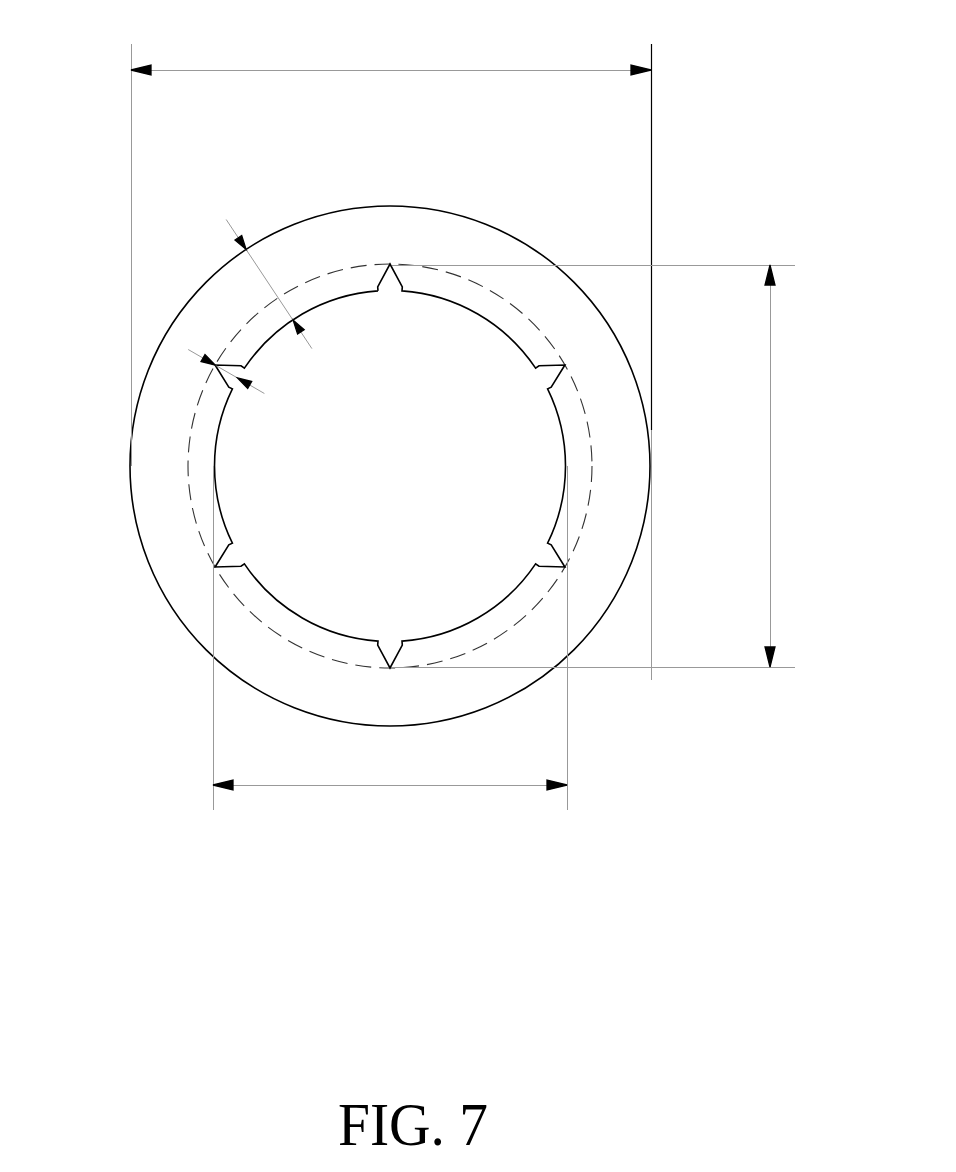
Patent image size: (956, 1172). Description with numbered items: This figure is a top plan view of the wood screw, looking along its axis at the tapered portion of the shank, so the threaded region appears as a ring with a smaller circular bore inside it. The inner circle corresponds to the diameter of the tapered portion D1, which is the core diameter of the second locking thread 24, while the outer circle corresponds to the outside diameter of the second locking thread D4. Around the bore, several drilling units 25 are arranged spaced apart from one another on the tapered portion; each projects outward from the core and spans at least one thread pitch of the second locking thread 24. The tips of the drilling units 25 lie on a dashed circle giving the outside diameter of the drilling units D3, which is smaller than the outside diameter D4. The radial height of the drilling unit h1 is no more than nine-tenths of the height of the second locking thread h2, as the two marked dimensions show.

The second locking thread 24 is at (198, 618).
The drilling unit 25 is at (213, 565).
The outside diameter of the second locking thread D4 is at (391, 348).
The outside diameter of the drilling unit D3 is at (623, 466).
The diameter of the tapered portion D1 is at (390, 652).
The height of the second locking thread h2 is at (301, 308).
The height of the drilling unit h1 is at (255, 396).